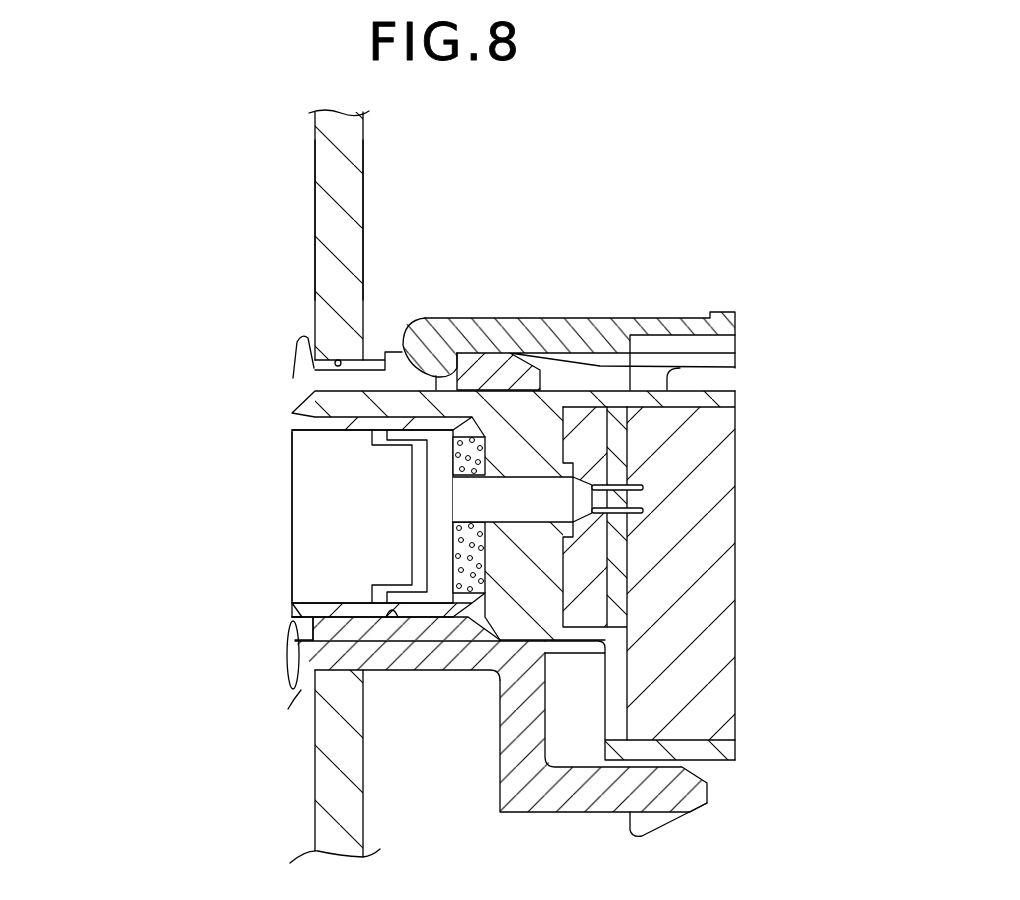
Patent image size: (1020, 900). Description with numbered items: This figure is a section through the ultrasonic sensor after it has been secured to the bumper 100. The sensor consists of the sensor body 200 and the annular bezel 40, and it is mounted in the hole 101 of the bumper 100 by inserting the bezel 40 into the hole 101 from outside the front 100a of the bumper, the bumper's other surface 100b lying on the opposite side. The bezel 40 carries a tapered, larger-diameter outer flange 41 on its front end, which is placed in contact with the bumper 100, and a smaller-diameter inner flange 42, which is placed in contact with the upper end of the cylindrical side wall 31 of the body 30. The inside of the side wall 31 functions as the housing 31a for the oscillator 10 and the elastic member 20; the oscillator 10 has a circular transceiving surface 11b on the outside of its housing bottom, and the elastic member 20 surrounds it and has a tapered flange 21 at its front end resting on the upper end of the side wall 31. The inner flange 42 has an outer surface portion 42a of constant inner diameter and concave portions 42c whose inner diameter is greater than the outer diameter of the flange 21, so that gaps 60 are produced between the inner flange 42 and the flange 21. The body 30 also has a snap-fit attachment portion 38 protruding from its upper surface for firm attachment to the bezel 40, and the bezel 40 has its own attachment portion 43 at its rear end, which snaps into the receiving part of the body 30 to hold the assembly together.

The bumper 100 is at (325, 160).
The front of the bumper 100a is at (313, 216).
The wall inner surface 100b is at (365, 247).
The hole 101 is at (336, 364).
The outer flange 41 is at (295, 346).
The attachment portion 38 is at (558, 318).
The inner flange 42 is at (297, 407).
The outer surface portion 42a is at (290, 612).
The concave portions 42c is at (290, 635).
The gaps 60 is at (290, 668).
The oscillator 10 is at (312, 495).
The transceiving surface 11b is at (292, 458).
The elastic member 20 is at (320, 596).
The flange 21 is at (292, 605).
The body 30 is at (751, 500).
The side wall 31 is at (425, 635).
The housing 31a is at (392, 618).
The attachment portion 43 is at (500, 760).
The sensor body 200 is at (556, 207).
The bezel 40 is at (144, 700).